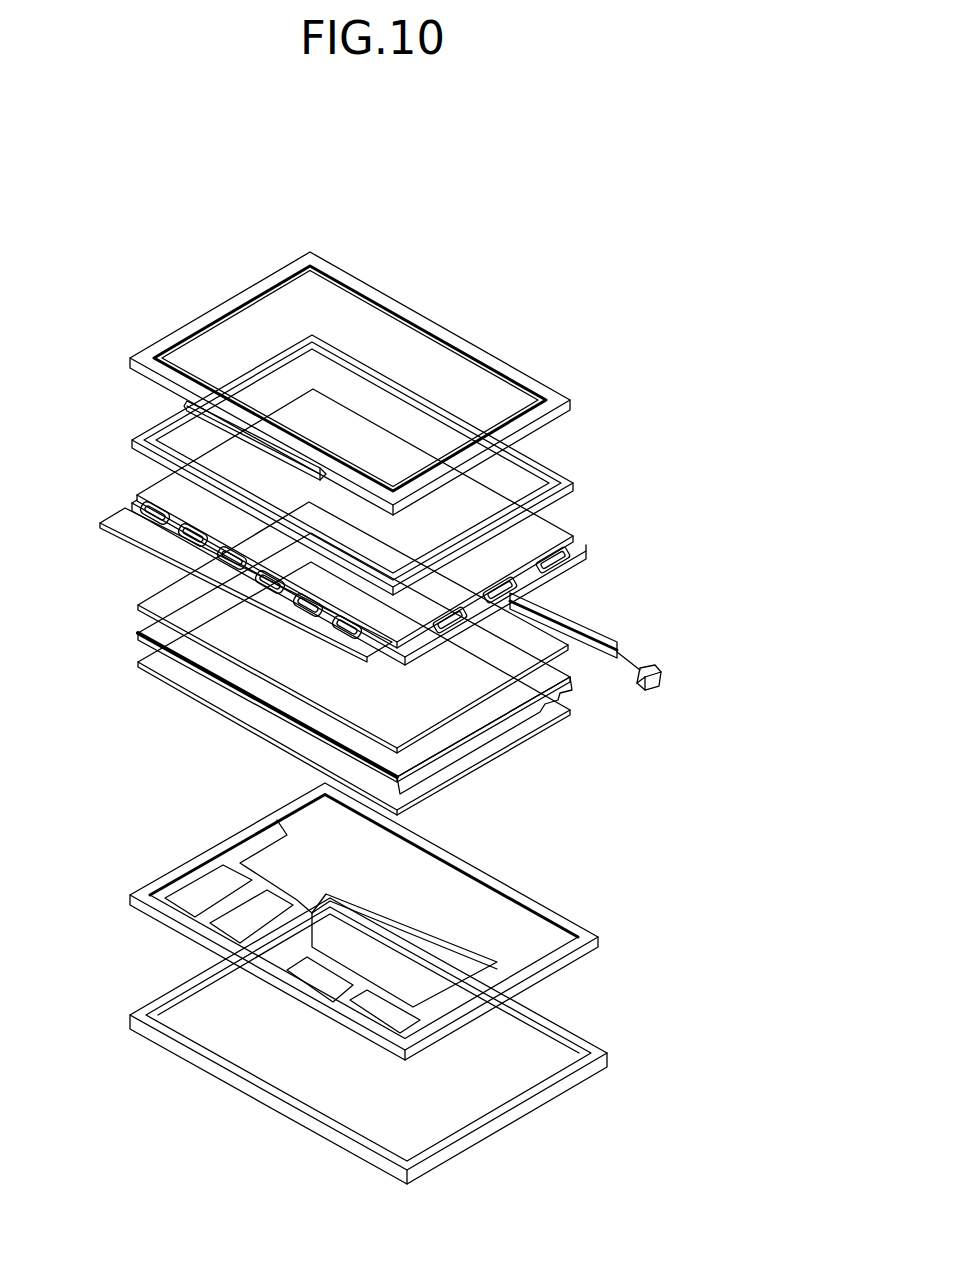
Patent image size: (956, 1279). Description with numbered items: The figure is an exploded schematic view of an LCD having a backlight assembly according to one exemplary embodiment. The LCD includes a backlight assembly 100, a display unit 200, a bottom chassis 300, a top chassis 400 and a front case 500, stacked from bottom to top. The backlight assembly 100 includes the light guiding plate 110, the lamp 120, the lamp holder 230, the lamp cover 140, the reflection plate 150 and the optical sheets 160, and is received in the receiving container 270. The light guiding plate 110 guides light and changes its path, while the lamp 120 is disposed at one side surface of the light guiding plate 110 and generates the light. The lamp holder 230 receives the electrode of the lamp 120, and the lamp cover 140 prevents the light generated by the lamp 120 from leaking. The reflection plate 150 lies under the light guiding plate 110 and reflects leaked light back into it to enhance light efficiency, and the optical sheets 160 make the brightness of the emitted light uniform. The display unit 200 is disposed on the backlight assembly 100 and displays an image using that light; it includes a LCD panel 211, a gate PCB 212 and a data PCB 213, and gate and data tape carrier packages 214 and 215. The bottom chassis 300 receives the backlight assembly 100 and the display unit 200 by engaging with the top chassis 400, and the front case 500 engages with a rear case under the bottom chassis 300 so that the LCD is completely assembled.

The backlight assembly 100 is at (331, 781).
The light guiding plate 110 is at (520, 707).
The lamp 120 is at (593, 653).
The lamp cover 140 is at (600, 637).
The reflection plate 150 is at (460, 763).
The optical sheets 160 is at (153, 597).
The display unit 200 is at (377, 539).
The LCD panel 211 is at (543, 530).
The gate PCB 212 is at (575, 547).
The data PCB 213 is at (135, 502).
The gate tape carrier package 214 is at (567, 572).
The data tape carrier package 215 is at (102, 522).
The lamp holder 230 is at (655, 667).
The receiving container 270 is at (200, 830).
The bottom chassis 300 is at (587, 1073).
The top chassis 400 is at (138, 416).
The front case 500 is at (528, 358).